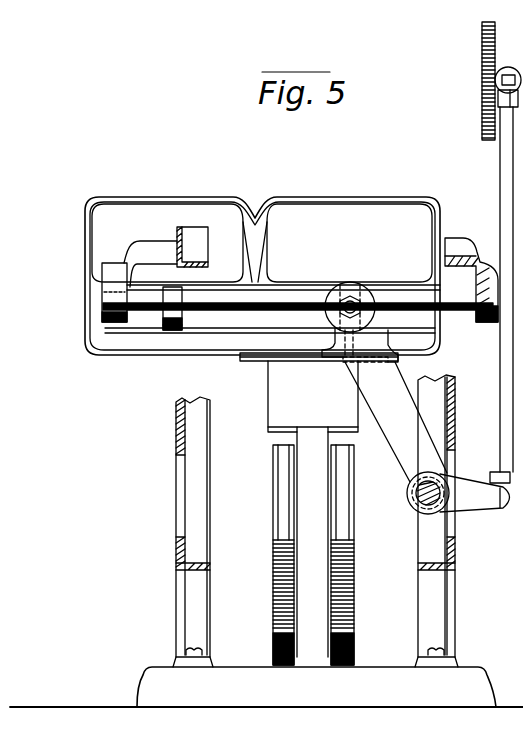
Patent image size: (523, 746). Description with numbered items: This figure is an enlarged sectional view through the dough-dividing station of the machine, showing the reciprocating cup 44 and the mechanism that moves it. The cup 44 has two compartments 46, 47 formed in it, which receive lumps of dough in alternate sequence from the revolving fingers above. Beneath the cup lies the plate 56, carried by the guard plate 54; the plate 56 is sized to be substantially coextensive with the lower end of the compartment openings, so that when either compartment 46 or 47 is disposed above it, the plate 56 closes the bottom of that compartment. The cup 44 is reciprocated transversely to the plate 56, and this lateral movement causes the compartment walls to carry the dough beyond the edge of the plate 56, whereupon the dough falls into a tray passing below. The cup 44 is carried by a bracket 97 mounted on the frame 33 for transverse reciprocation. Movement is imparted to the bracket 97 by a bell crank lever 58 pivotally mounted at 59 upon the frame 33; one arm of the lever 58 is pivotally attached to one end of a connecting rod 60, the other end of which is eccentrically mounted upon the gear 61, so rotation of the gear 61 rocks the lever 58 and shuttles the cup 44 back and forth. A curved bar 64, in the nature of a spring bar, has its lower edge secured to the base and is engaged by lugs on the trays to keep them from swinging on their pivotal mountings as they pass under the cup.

The frame 33 is at (143, 252).
The reciprocating cup 44 is at (241, 206).
The compartment 46 is at (160, 214).
The compartment 47 is at (355, 214).
The guard plate 54 is at (308, 500).
The plate 56 is at (242, 367).
The bell crank lever 58 is at (395, 437).
The pivot 59 is at (413, 550).
The connecting rod 60 is at (500, 162).
The gear 61 is at (482, 107).
The curved bar 64 is at (282, 582).
The bracket 97 is at (193, 322).